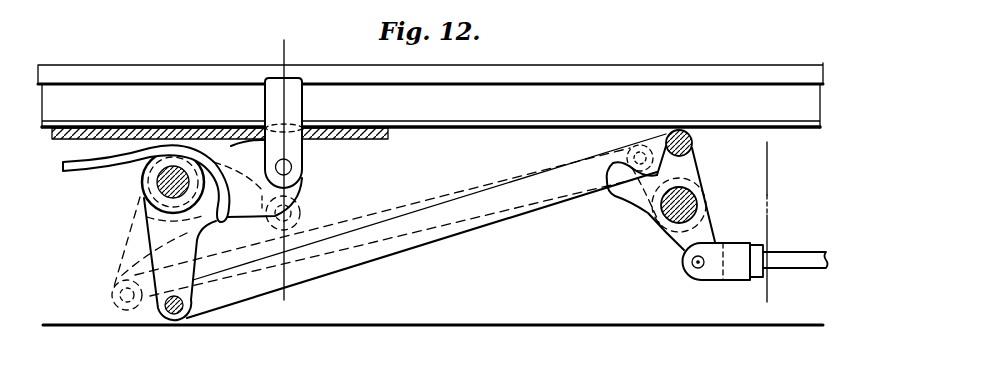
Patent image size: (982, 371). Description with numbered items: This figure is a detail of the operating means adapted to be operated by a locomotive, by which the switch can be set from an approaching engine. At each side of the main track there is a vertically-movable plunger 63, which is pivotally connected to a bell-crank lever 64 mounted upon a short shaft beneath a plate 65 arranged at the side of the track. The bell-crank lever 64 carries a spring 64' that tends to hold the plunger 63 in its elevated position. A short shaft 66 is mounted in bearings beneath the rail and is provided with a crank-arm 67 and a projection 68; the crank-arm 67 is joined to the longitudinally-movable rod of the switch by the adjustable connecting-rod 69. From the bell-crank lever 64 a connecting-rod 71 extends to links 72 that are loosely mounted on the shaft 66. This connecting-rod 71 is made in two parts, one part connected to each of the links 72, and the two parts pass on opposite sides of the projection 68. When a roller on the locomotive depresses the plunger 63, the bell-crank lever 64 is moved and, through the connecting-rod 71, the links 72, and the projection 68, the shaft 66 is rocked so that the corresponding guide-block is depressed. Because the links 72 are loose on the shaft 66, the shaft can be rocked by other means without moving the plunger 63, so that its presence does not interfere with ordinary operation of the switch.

The plunger 63 is at (288, 97).
The bell-crank lever 64 is at (190, 230).
The spring 64' is at (141, 183).
The plate 65 is at (338, 142).
The short shaft 66 is at (696, 199).
The crank-arm 67 is at (672, 241).
The projection 68 is at (617, 200).
The adjustable connecting-rod 69 is at (787, 265).
The connecting-rod 71 is at (430, 231).
The links 72 is at (690, 160).